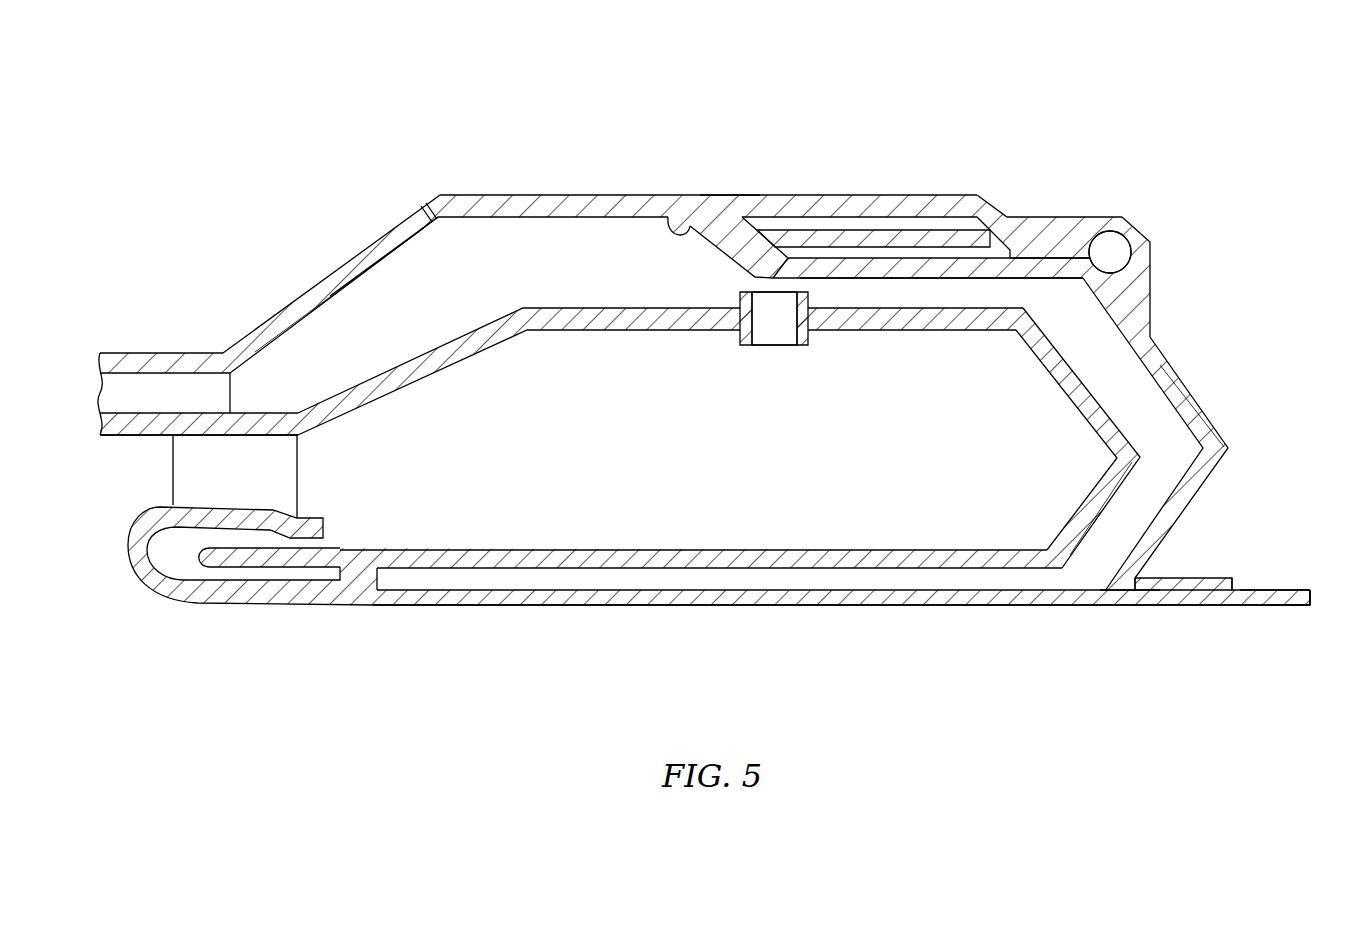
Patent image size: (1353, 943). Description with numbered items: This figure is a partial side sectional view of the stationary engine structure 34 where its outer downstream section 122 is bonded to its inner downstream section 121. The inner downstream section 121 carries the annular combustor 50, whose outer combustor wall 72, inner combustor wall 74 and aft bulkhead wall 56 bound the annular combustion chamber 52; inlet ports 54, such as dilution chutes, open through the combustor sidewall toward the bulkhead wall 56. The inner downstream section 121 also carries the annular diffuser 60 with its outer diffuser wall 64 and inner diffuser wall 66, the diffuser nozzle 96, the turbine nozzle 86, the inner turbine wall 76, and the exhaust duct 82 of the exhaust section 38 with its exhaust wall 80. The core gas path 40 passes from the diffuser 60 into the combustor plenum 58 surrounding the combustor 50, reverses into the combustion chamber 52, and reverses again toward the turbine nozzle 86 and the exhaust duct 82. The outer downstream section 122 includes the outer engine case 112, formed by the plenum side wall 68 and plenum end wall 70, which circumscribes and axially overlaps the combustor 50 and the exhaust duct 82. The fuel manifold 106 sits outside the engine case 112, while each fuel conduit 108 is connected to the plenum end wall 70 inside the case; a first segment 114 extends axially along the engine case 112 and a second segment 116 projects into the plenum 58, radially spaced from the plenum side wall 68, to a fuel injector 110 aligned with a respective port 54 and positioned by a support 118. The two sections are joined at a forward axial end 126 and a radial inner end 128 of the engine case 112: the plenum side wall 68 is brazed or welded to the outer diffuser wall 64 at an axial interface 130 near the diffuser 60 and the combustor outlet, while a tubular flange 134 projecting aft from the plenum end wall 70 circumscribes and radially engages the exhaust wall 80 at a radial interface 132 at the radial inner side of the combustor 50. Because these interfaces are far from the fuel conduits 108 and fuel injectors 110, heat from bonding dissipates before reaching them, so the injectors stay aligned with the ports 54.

The stationary engine structure 34 is at (266, 125).
The exhaust section 38 is at (1300, 586).
The core gas path 40 is at (670, 696).
The annular combustor 50 is at (622, 585).
The annular combustion chamber 52 is at (639, 453).
The inlet ports 54 is at (771, 327).
The aft bulkhead wall 56 is at (1086, 420).
The combustor plenum 58 is at (520, 266).
The annular diffuser 60 is at (158, 328).
The outer diffuser wall 64 is at (270, 325).
The inner diffuser wall 66 is at (124, 440).
The plenum side wall 68 is at (570, 195).
The plenum end wall 70 is at (1197, 398).
The outer combustor wall 72 is at (462, 362).
The inner combustor wall 74 is at (487, 548).
The inner turbine wall 76 is at (848, 622).
The exhaust wall 80 is at (1300, 614).
The exhaust duct 82 is at (1285, 597).
The turbine nozzle 86 is at (312, 480).
The diffuser nozzle 96 is at (238, 385).
The fuel manifold 106 is at (1135, 224).
The fuel conduits 108 is at (888, 287).
The fuel injectors 110 is at (718, 266).
The outer engine case 112 is at (733, 190).
The conduit first segment 114 is at (1022, 280).
The conduit second segment 116 is at (880, 229).
The support 118 is at (670, 216).
The inner downstream section 121 is at (324, 260).
The outer downstream section 122 is at (990, 188).
The forward axial end 126 is at (418, 207).
The radial inner end 128 is at (1147, 608).
The axial interface 130 is at (437, 235).
The radial interface 132 is at (1242, 580).
The tubular flange 134 is at (1205, 578).